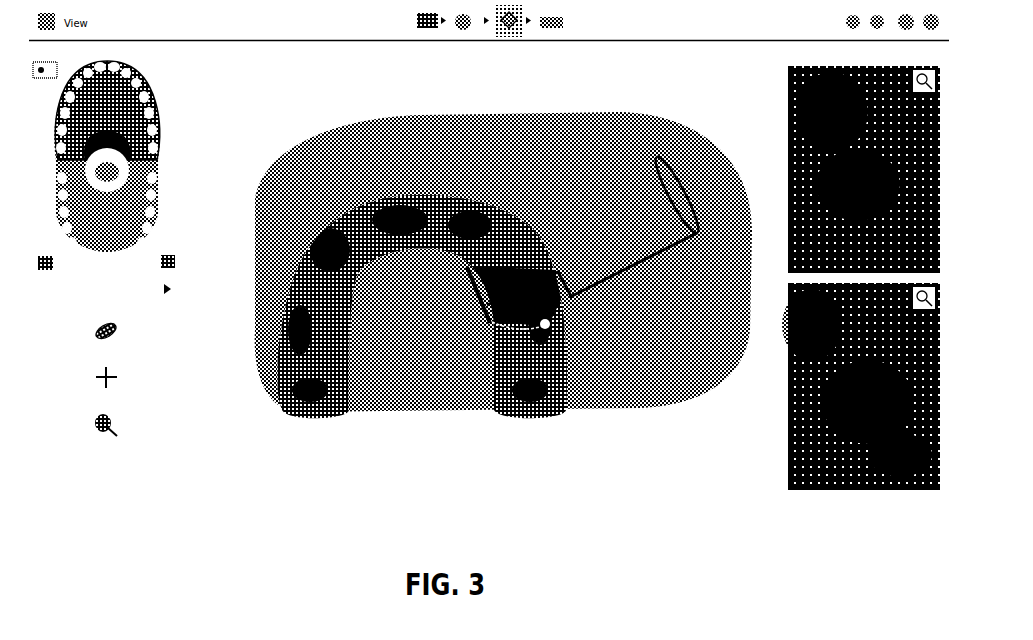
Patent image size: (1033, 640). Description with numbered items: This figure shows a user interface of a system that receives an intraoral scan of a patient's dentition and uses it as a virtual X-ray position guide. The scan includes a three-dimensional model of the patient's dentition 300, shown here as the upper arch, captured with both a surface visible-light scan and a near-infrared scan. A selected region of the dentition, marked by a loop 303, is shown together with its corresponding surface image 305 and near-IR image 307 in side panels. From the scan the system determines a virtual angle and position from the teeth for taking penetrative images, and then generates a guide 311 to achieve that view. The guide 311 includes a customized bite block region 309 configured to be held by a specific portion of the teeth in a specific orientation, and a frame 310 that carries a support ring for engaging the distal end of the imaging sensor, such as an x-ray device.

The 3D model of the patient's dentition 300 is at (332, 228).
The loop 303 is at (506, 250).
The surface image 305 is at (861, 386).
The near-IR image 307 is at (864, 171).
The customized bite block region 309 is at (542, 263).
The frame 310 is at (640, 268).
The guide 311 is at (668, 157).